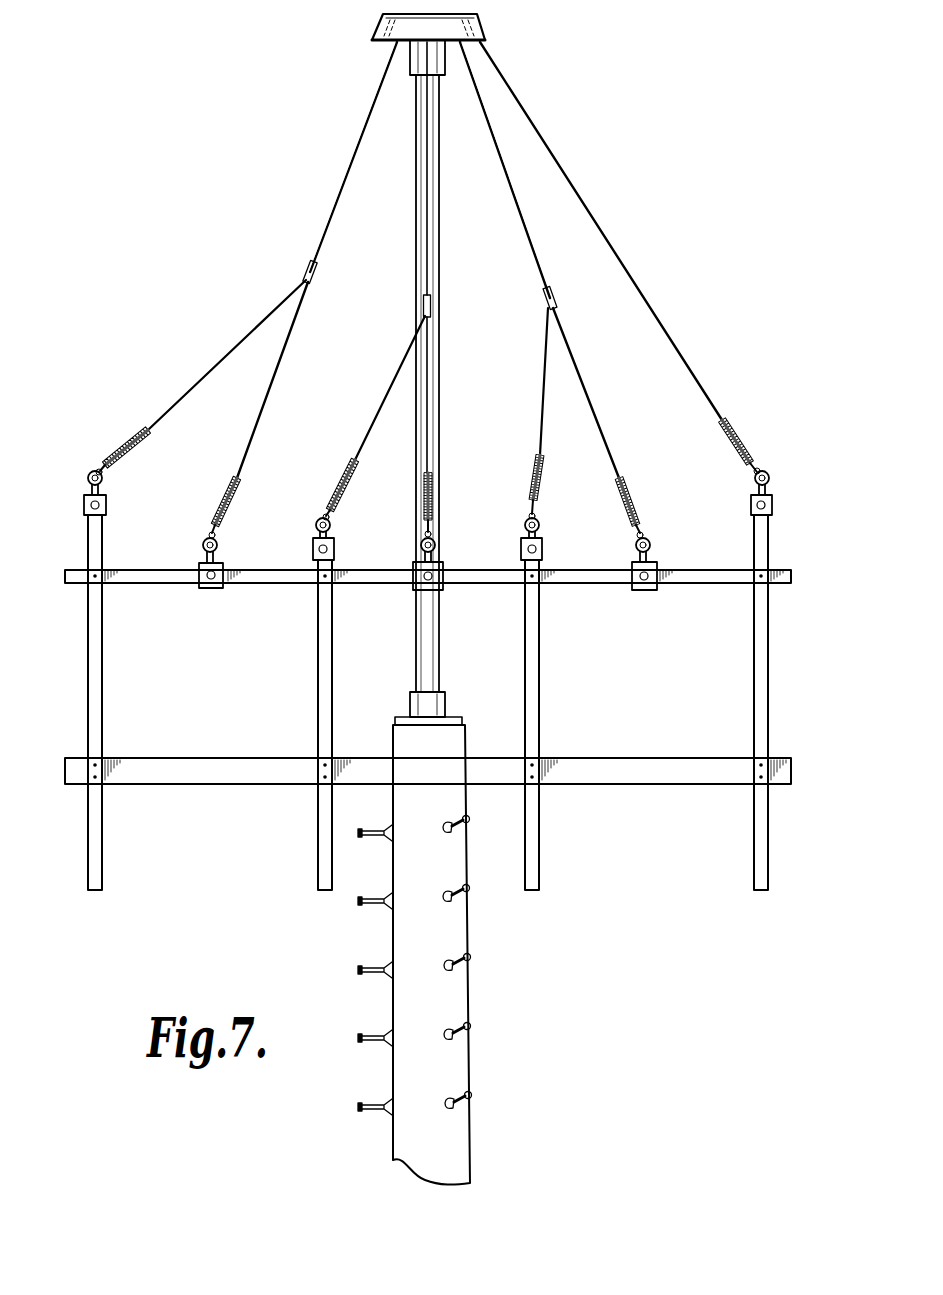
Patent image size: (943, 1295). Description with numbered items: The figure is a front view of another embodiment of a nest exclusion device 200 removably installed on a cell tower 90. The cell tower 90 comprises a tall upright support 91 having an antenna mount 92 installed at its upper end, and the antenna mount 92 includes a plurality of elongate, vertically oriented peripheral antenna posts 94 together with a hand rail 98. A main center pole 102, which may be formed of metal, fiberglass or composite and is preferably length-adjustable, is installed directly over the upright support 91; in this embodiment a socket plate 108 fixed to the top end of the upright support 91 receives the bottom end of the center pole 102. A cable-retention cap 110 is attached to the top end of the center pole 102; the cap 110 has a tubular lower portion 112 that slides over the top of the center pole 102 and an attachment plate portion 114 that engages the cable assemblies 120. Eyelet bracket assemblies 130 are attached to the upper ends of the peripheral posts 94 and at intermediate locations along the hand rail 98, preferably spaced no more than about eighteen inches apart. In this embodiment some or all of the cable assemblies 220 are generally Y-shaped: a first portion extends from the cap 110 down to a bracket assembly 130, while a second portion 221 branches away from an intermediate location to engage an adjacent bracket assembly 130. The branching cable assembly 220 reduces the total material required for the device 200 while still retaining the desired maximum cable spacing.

The cell tower 90 is at (650, 1014).
The upright support 91 is at (471, 1048).
The antenna mount 92 is at (662, 790).
The antenna posts 94 is at (88, 856).
The hand rail 98 is at (792, 572).
The center pole 102 is at (441, 468).
The socket plate 108 is at (410, 702).
The cable-retention cap 110 is at (492, 15).
The tubular lower portion 112 is at (446, 60).
The attachment plate portion 114 is at (376, 30).
The cable assemblies 120 is at (645, 297).
The eyelet bracket assembly 130 is at (85, 494).
The nest exclusion device 200 is at (670, 150).
The cable assembly 220 is at (265, 410).
The second portion of the cable assembly 221 is at (206, 377).